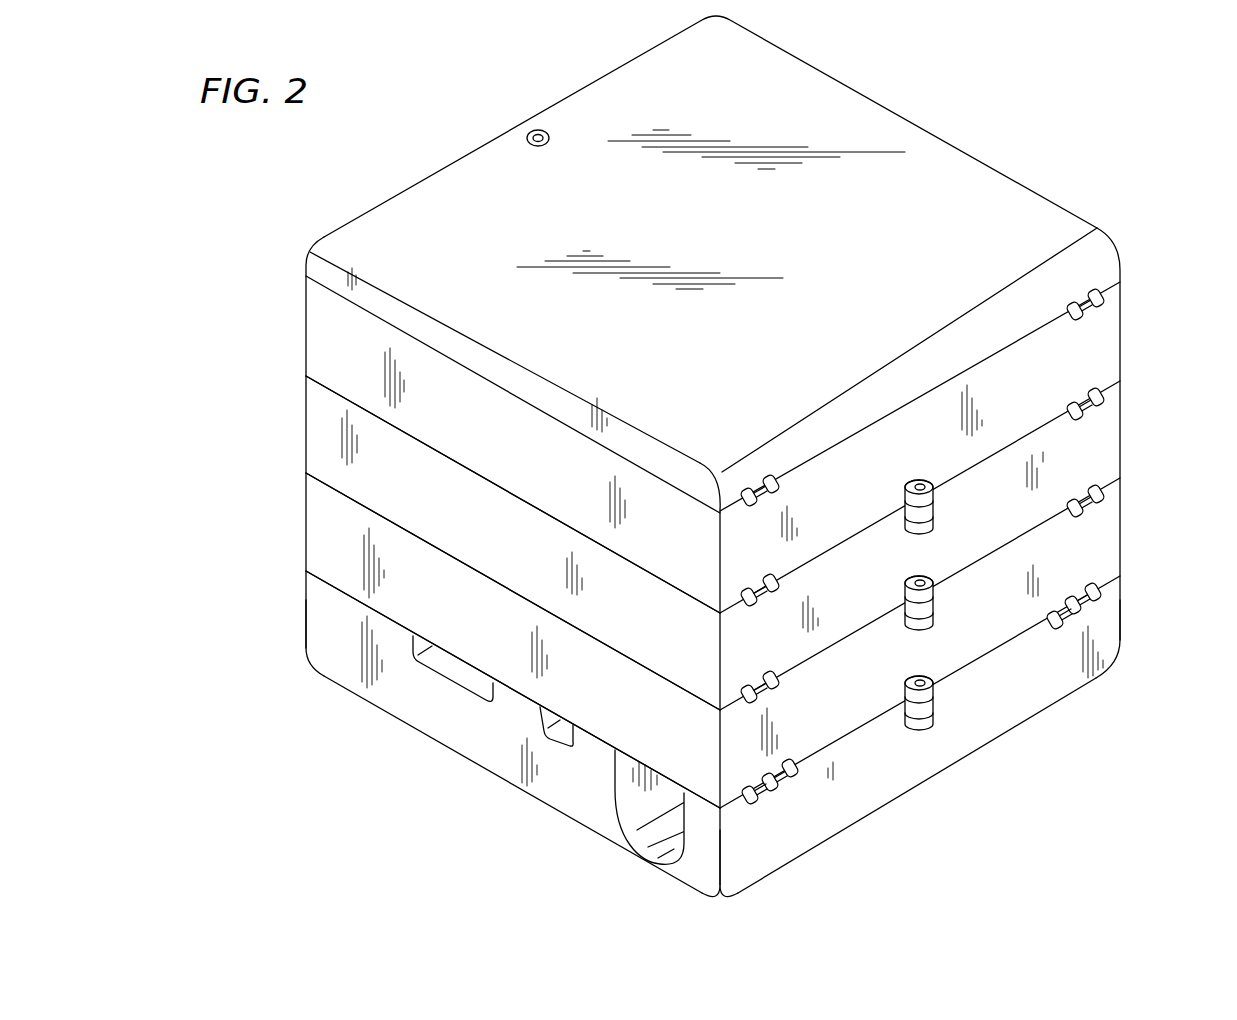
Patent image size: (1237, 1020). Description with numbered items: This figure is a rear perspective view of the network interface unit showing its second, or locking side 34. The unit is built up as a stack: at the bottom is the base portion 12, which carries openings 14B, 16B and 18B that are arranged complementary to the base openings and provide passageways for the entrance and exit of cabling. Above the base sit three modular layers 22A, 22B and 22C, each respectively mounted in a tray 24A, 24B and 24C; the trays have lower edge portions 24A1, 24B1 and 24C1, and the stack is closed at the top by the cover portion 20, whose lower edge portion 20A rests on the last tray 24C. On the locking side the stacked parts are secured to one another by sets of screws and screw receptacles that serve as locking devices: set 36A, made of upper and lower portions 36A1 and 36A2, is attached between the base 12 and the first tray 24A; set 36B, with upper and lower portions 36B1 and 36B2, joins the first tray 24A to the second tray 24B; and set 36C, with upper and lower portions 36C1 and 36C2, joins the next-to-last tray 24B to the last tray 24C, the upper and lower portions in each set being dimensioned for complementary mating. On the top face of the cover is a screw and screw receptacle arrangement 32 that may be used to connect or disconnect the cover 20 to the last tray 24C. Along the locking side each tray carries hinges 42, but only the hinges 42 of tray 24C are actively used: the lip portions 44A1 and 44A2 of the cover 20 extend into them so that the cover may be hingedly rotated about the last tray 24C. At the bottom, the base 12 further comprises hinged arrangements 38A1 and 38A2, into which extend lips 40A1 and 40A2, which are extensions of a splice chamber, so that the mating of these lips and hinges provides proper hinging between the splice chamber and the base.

The base portion 12 is at (306, 615).
The opening 14B is at (622, 795).
The opening 16B is at (560, 724).
The opening 18B is at (457, 684).
The cover portion 20 is at (306, 254).
The lower edge portion of cover 20A is at (452, 362).
The modular layer 22A is at (306, 533).
The modular layer 22B is at (306, 433).
The modular layer 22C is at (306, 337).
The tray 24A is at (306, 520).
The tray 24B is at (306, 420).
The tray 24C is at (306, 320).
The lower edge portion of tray 24A1 is at (424, 643).
The lower edge portion of tray 24B1 is at (423, 541).
The lower edge portion of tray 24C1 is at (420, 442).
The screw and screw receptacle arrangement 32 is at (565, 138).
The locking side 34 is at (1146, 320).
The set of screw and screw receptacle 36A is at (924, 719).
The upper portion of locking set 36A1 is at (932, 707).
The lower portion of locking set 36A2 is at (907, 724).
The set of screw and screw receptacle 36B is at (924, 621).
The upper portion of locking set 36B1 is at (932, 607).
The lower portion of locking set 36B2 is at (907, 624).
The set of screw and screw receptacle 36C is at (924, 518).
The upper portion of locking set 36C1 is at (932, 510).
The lower portion of locking set 36C2 is at (907, 528).
The hinged arrangement 38A1 is at (772, 790).
The hinged arrangement 38A2 is at (1057, 628).
The lip 40A1 is at (790, 775).
The lip 40A2 is at (1094, 606).
The hinges 42 is at (746, 502).
The lip portion of cover 44A1 is at (758, 484).
The lip portion of cover 44A2 is at (1082, 302).